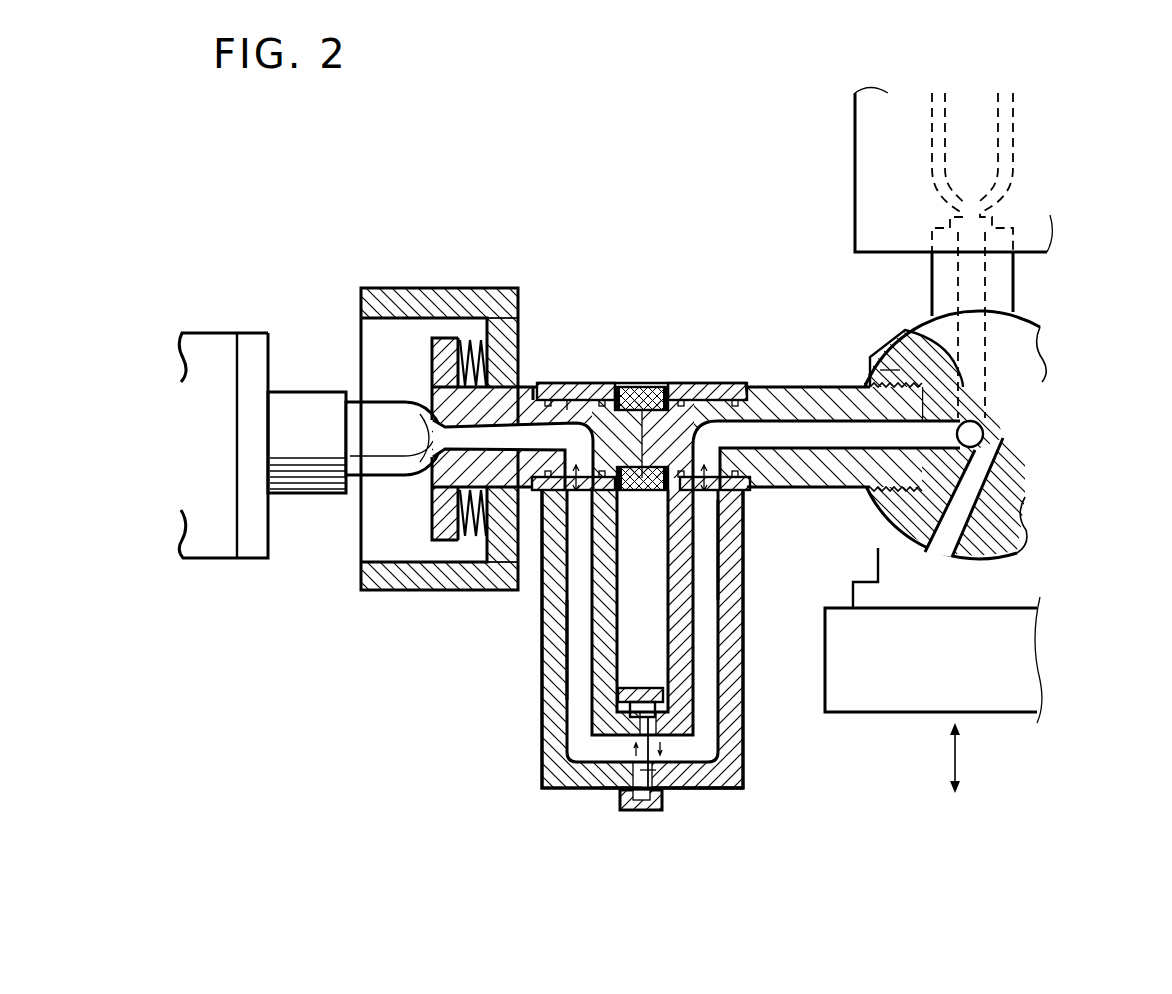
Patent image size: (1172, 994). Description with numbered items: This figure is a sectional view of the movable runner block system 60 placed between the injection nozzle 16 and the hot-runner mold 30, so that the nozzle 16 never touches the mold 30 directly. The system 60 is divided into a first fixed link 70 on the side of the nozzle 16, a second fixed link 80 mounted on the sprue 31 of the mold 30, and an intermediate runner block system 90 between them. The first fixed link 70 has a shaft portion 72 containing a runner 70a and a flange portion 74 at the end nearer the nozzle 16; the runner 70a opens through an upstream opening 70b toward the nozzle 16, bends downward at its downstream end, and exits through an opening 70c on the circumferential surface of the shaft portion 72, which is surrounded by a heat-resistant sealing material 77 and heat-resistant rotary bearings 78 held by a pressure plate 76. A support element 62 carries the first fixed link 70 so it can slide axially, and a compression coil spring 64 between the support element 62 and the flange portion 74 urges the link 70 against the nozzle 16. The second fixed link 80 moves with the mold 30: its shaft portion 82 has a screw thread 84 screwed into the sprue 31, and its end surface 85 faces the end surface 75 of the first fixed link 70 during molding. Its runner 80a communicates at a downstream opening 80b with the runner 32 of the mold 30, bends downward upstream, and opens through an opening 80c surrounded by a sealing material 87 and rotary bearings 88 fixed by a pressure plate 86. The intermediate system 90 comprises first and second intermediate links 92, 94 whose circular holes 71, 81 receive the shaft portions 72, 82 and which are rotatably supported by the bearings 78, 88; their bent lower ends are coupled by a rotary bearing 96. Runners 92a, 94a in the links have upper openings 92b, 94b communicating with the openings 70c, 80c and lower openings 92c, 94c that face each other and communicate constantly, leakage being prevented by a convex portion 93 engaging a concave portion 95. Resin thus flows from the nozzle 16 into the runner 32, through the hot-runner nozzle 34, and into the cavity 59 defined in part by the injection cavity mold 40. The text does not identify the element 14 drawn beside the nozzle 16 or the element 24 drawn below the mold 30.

The frame block 14 is at (218, 324).
The injection nozzle 16 is at (368, 394).
The movable member 24 is at (1020, 680).
The hot-runner mold 30 is at (1030, 348).
The sprue 31 is at (930, 472).
The runner 32 is at (984, 433).
The hot-runner nozzle 34 is at (1017, 265).
The injection cavity mold 40 is at (848, 115).
The cavity 59 is at (933, 150).
The movable runner block system 60 is at (664, 252).
The support element 62 is at (476, 297).
The compression coil spring 64 is at (478, 337).
The first fixed link 70 is at (534, 376).
The runner 70a is at (594, 383).
The opening 70b is at (433, 492).
The opening 70c is at (610, 386).
The circular hole 71 is at (598, 386).
The shaft portion 72 is at (520, 385).
The flange portion 74 is at (443, 338).
The end surface 75 is at (622, 492).
The pressure plate 76 is at (647, 485).
The heat-resistant sealing material 77 is at (567, 398).
The heat-resistant rotary bearings 78 is at (522, 520).
The second fixed link 80 is at (798, 376).
The runner 80a is at (790, 383).
The opening 80b is at (848, 450).
The opening 80c is at (772, 449).
The circular hole 81 is at (755, 386).
The shaft portion 82 is at (830, 388).
The screw thread 84 is at (876, 553).
The end surface 85 is at (679, 386).
The pressure plate 86 is at (664, 386).
The heat-resistant sealing material 87 is at (718, 384).
The heat-resistant rotary bearings 88 is at (671, 385).
The intermediate runner block system 90 is at (580, 800).
The first intermediate link 92 is at (552, 728).
The runner 92a is at (572, 633).
The upper opening 92b is at (575, 492).
The lower opening 92c is at (618, 780).
The convex portion 93 is at (631, 812).
The second intermediate link 94 is at (746, 763).
The runner 94a is at (700, 690).
The upper opening 94b is at (716, 492).
The lower opening 94c is at (716, 790).
The concave portion 95 is at (660, 686).
The rotary bearing 96 is at (658, 810).